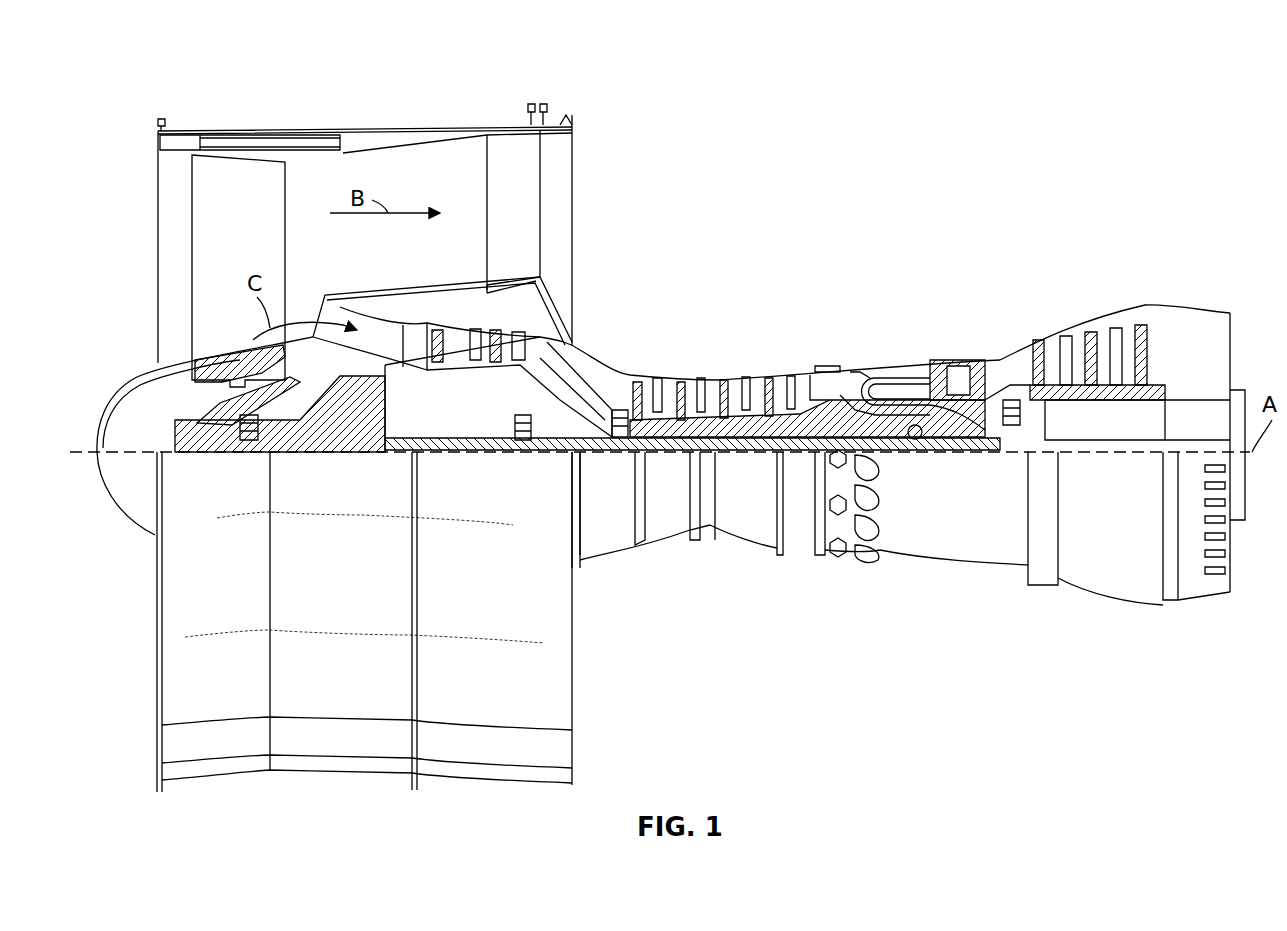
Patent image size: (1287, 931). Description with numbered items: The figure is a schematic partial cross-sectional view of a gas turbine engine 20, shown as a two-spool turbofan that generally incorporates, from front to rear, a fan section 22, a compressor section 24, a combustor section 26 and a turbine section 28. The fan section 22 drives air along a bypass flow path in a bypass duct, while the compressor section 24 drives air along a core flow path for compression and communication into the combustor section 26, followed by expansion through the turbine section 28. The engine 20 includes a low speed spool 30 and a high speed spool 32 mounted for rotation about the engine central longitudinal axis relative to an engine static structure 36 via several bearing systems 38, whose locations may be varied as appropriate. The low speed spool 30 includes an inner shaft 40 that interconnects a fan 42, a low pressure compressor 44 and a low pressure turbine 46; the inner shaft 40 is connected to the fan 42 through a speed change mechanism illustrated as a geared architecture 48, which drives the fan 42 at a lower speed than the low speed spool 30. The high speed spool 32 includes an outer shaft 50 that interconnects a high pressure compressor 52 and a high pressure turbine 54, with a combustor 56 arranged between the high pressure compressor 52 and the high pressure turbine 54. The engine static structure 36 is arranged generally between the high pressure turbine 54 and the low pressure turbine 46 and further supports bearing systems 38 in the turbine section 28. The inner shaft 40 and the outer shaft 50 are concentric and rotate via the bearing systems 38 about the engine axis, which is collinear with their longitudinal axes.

The gas turbine engine 20 is at (1130, 100).
The fan section 22 is at (387, 103).
The compressor section 24 is at (850, 240).
The combustor section 26 is at (928, 240).
The turbine section 28 is at (1180, 240).
The low speed spool 30 is at (762, 458).
The high speed spool 32 is at (797, 400).
The engine static structure 36 is at (806, 556).
The bearing systems 38 is at (247, 416).
The inner shaft 40 is at (592, 445).
The fan 42 is at (248, 244).
The low pressure compressor 44 is at (478, 332).
The low pressure turbine 46 is at (1103, 330).
The geared architecture 48 is at (368, 426).
The outer shaft 50 is at (918, 432).
The high pressure compressor 52 is at (720, 392).
The high pressure turbine 54 is at (957, 366).
The combustor 56 is at (887, 385).